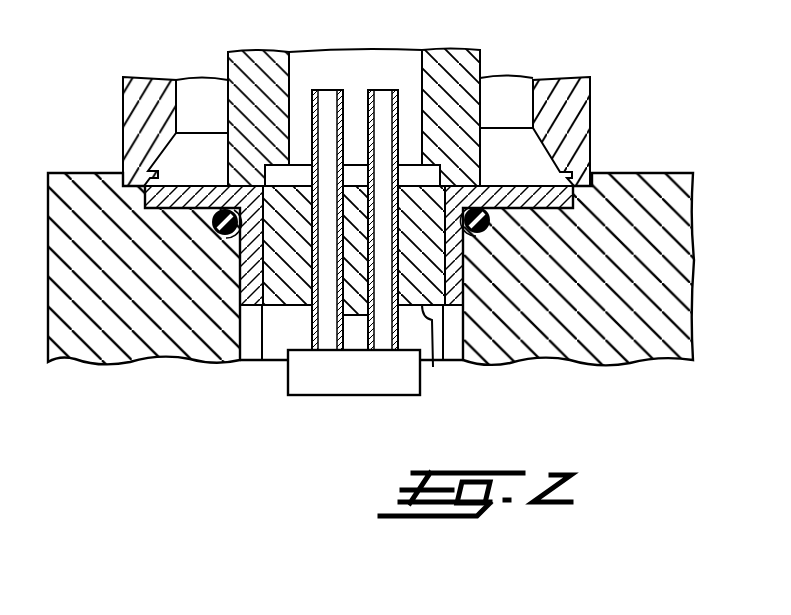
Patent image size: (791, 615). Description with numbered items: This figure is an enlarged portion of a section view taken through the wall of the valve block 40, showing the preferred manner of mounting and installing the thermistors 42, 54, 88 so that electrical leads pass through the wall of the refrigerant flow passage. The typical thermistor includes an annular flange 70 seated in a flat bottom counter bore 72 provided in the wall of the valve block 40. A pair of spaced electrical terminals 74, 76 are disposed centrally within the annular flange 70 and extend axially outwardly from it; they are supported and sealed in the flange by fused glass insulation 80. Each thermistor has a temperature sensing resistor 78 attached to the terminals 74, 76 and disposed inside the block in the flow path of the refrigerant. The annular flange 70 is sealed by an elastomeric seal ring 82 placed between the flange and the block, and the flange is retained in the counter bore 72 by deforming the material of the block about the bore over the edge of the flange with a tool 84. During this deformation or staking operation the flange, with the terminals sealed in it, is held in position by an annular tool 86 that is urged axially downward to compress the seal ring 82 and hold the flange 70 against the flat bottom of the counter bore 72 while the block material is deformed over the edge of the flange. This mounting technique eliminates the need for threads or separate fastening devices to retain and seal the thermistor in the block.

The valve block 40 is at (618, 172).
The thermistor 42 is at (261, 416).
The thermistor 54 is at (261, 416).
The thermistor 88 is at (261, 416).
The annular flange 70 is at (502, 184).
The counter bore 72 is at (168, 185).
The electrical terminal 74 is at (305, 90).
The electrical terminal 76 is at (362, 90).
The temperature sensing resistor 78 is at (321, 375).
The fused glass insulation 80 is at (433, 367).
The elastomeric seal ring 82 is at (208, 224).
The tool 84 is at (593, 100).
The annular tool 86 is at (448, 50).